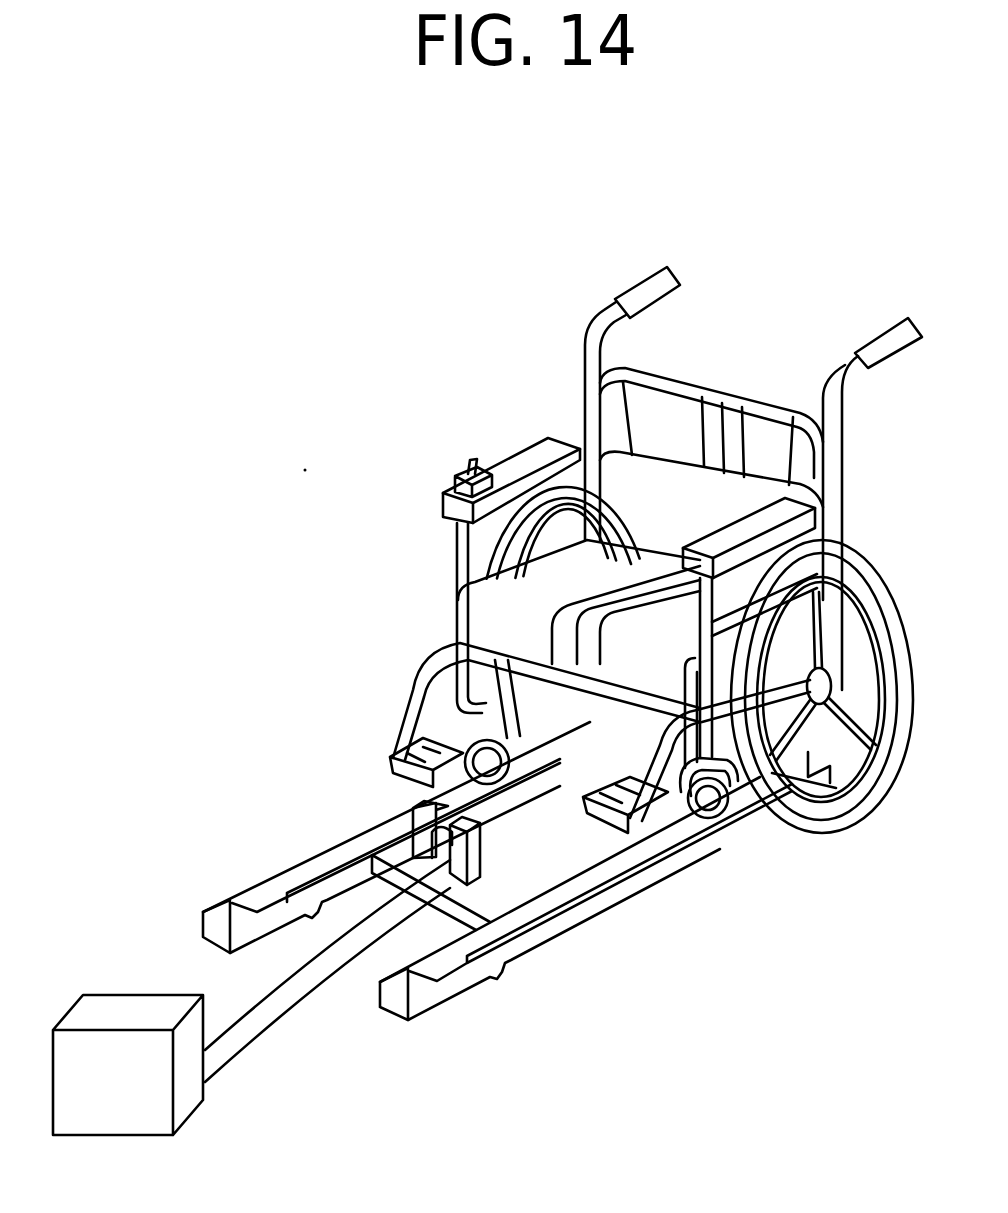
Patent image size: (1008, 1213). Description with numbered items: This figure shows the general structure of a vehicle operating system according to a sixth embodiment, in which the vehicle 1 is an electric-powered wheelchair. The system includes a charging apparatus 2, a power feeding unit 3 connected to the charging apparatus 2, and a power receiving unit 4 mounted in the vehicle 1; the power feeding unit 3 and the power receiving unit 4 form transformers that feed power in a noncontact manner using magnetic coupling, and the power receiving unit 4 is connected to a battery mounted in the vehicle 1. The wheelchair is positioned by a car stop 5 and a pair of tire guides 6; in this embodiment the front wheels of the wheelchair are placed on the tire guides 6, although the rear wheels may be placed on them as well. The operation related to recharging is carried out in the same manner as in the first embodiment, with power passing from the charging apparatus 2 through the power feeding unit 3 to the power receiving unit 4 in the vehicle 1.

The vehicle 1 is at (617, 525).
The charging apparatus 2 is at (117, 1002).
The power feeding unit 3 is at (403, 827).
The power receiving unit 4 is at (555, 703).
The car stop 5 is at (247, 900).
The tire guides 6 is at (287, 880).